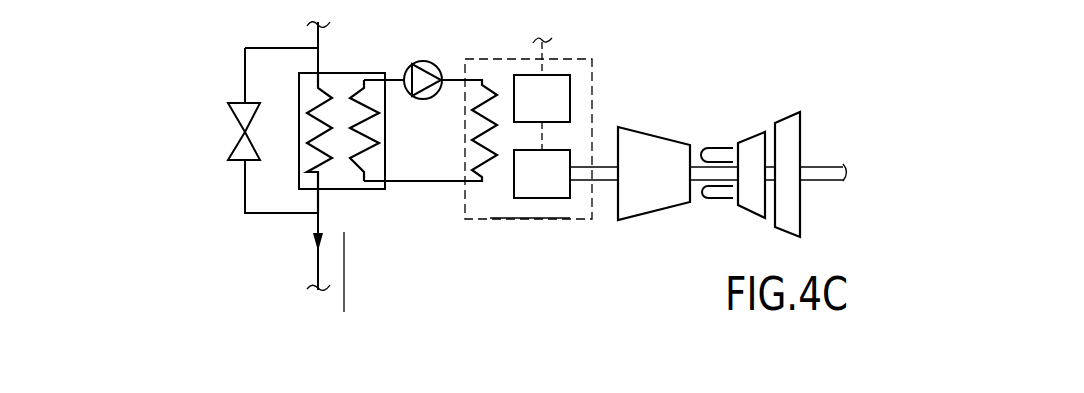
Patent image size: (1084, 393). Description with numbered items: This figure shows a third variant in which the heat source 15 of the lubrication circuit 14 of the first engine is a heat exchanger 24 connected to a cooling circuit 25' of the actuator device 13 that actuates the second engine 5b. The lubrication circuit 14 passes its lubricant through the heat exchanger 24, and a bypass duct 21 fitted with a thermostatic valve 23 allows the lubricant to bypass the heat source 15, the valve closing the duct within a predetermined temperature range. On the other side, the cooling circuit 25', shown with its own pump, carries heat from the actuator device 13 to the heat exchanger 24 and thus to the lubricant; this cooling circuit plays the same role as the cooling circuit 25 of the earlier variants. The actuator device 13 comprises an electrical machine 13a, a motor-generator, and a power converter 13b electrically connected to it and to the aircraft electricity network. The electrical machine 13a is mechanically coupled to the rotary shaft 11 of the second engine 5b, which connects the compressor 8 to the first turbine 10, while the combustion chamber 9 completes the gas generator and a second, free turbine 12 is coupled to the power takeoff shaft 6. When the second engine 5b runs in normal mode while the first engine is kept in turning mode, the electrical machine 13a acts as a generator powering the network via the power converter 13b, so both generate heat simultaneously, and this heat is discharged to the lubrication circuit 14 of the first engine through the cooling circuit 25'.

The lubrication circuit 14 is at (320, 58).
The heat exchanger 24 is at (342, 189).
The heat source 15 is at (373, 197).
The thermostatic valve 23 is at (243, 131).
The bypass duct 21 is at (245, 188).
The cooling circuit 25' is at (403, 64).
The cooling circuit 25 is at (430, 151).
The actuator device 13 is at (592, 59).
The power converter 13b is at (560, 109).
The electrical machine 13a is at (560, 183).
The compressor 8 is at (661, 183).
The rotary shaft 11 is at (698, 172).
The combustion chamber 9 is at (712, 147).
The first turbine 10 is at (744, 210).
The second turbine 12 is at (791, 122).
The power takeoff shaft 6 is at (834, 183).
The second engine 5b is at (786, 38).